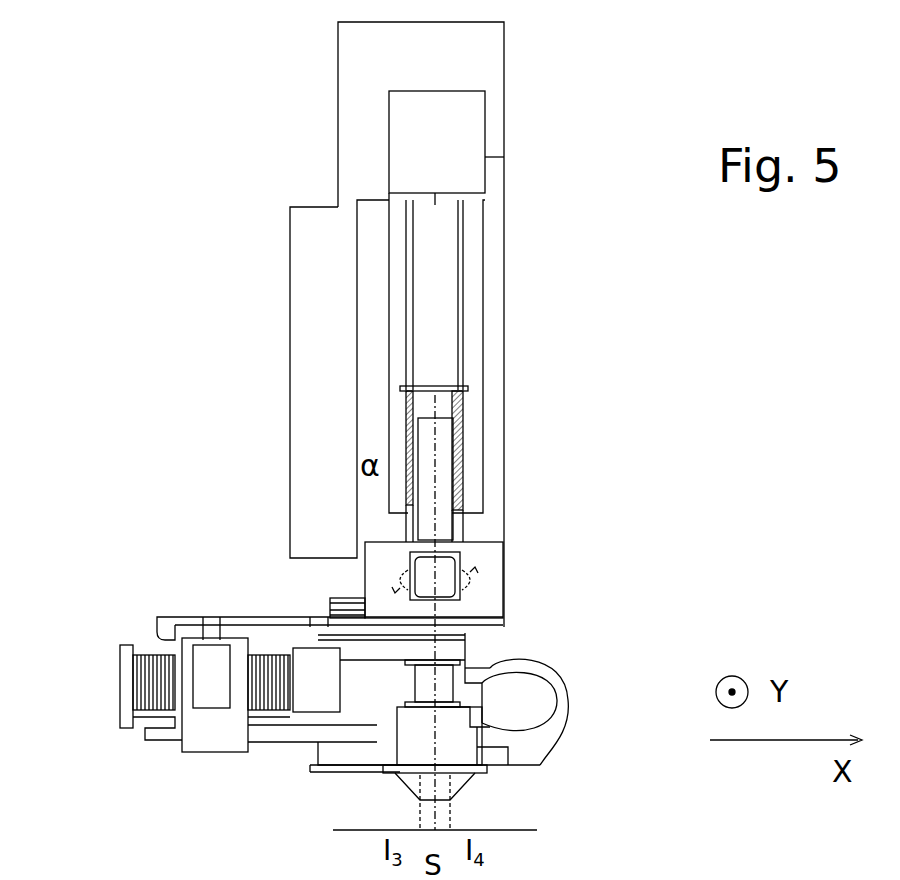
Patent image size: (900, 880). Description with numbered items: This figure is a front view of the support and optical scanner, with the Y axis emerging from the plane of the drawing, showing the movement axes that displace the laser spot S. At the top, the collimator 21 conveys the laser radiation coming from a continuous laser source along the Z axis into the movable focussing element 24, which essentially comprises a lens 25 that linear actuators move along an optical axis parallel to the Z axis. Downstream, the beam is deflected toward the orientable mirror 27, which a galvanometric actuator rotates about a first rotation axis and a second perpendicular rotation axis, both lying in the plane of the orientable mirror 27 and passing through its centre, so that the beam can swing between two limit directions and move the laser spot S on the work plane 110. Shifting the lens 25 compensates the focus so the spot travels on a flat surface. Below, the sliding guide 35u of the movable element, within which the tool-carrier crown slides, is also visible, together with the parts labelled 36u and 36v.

The collimator 21 is at (415, 120).
The movable focussing element 24 is at (463, 314).
The lens 25 is at (480, 423).
The orientable mirror 27 is at (453, 563).
The upper clamp 36u is at (189, 695).
The lower clamp 36v is at (464, 694).
The sliding guide 35u is at (382, 740).
The work plane 110 is at (397, 848).